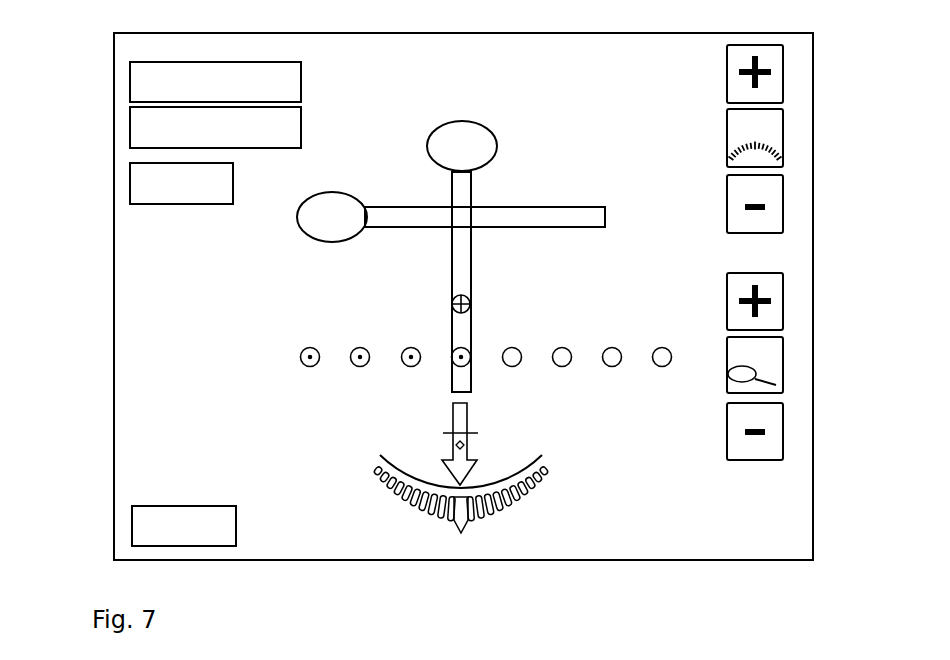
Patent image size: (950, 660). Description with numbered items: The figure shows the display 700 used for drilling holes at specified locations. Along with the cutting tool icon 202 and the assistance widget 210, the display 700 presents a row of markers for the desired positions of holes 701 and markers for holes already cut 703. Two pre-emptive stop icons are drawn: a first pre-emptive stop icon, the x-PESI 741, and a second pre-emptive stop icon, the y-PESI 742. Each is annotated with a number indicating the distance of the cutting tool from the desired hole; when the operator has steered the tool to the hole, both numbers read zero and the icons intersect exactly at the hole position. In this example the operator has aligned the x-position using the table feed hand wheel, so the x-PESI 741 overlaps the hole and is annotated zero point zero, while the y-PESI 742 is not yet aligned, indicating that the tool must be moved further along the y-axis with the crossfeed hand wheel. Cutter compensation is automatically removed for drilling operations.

The display 700 is at (145, 289).
The first pre-emptive stop icon (x-PESI) 741 is at (447, 121).
The second pre-emptive stop icon (y-PESI) 742 is at (350, 192).
The cutting tool icon 202 is at (453, 302).
The markers for the desired positions of holes 701 is at (306, 349).
The markers for holes already cut 703 is at (663, 350).
The assistance widget 210 is at (526, 442).